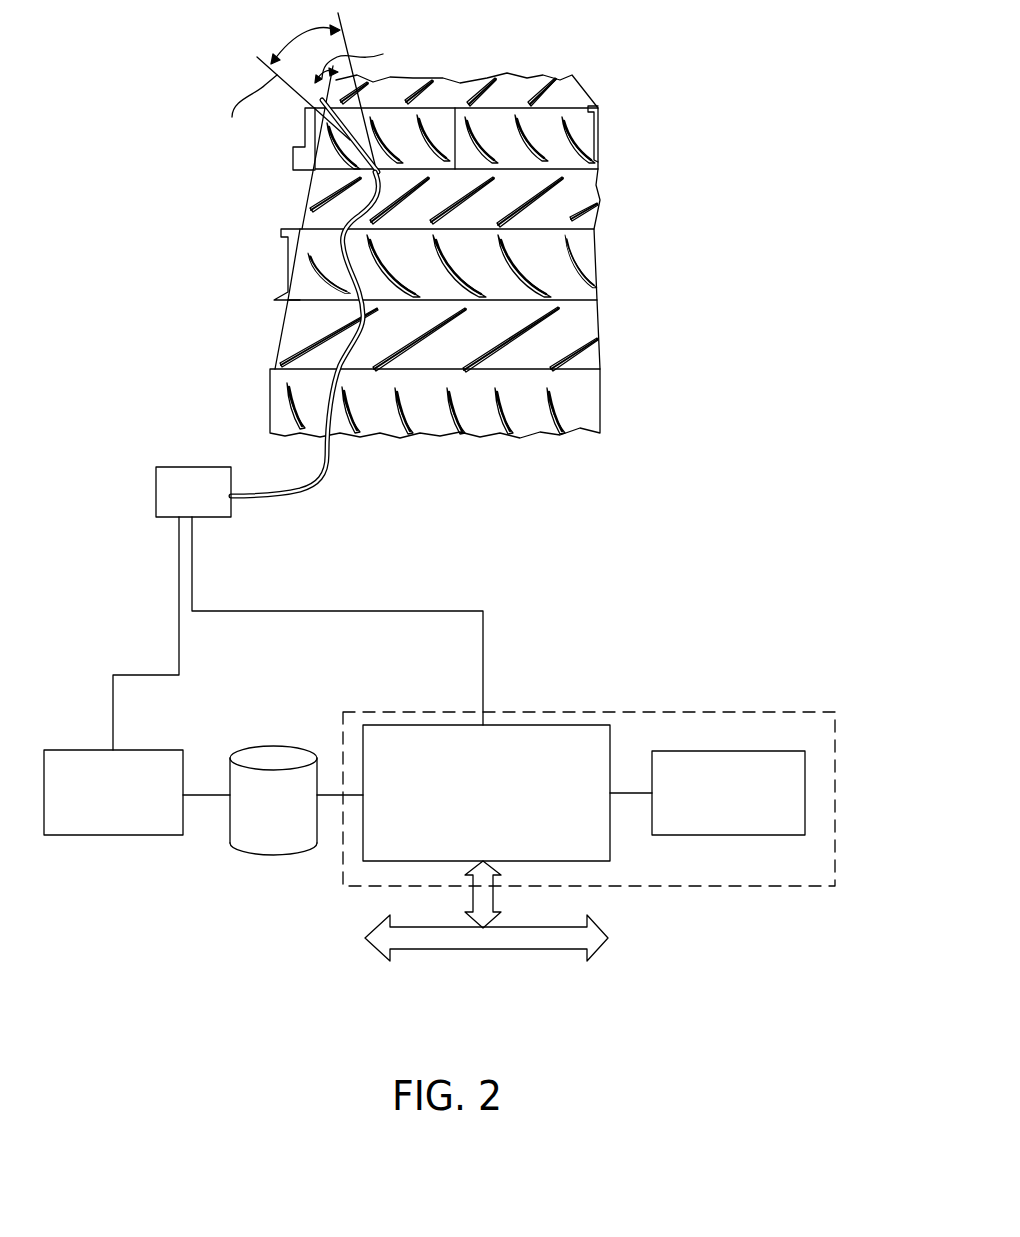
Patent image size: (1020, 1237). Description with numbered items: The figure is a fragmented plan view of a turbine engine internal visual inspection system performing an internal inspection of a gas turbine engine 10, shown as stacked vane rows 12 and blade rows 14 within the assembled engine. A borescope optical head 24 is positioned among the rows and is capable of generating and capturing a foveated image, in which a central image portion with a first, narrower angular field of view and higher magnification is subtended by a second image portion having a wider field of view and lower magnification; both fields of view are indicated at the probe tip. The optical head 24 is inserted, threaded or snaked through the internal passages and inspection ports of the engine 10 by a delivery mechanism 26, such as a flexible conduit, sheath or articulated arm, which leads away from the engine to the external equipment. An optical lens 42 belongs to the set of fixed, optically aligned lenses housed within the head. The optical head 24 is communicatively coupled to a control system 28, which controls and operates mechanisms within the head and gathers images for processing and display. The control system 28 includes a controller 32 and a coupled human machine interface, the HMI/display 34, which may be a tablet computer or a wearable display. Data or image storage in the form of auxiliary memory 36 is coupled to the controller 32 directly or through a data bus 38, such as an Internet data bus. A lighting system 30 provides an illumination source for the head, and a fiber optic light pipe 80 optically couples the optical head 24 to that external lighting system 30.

The gas turbine engine 10 is at (486, 237).
The vane rows 12 is at (565, 125).
The blade rows 14 is at (575, 200).
The optical head 24 is at (380, 162).
The delivery mechanism 26 is at (320, 482).
The control system 28 is at (589, 780).
The lighting system 30 is at (112, 838).
The controller 32 is at (593, 837).
The HMI/display 34 is at (790, 822).
The auxiliary memory 36 is at (273, 823).
The data bus 38 is at (462, 938).
The optical lens 42 is at (604, 425).
The fiber optic light pipe 80 is at (140, 675).